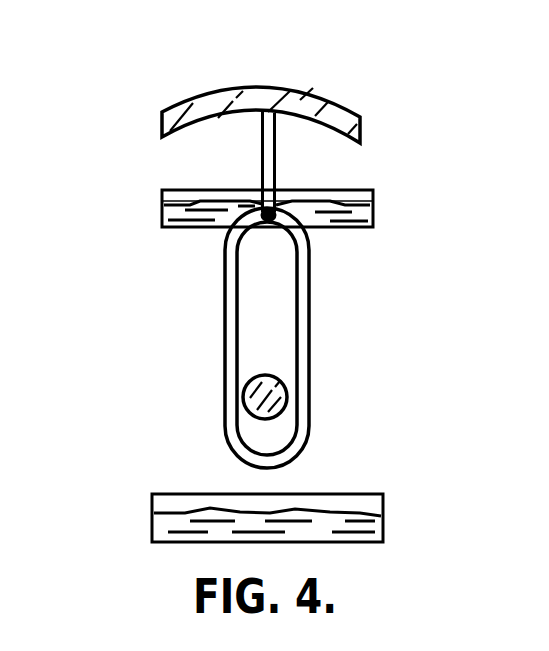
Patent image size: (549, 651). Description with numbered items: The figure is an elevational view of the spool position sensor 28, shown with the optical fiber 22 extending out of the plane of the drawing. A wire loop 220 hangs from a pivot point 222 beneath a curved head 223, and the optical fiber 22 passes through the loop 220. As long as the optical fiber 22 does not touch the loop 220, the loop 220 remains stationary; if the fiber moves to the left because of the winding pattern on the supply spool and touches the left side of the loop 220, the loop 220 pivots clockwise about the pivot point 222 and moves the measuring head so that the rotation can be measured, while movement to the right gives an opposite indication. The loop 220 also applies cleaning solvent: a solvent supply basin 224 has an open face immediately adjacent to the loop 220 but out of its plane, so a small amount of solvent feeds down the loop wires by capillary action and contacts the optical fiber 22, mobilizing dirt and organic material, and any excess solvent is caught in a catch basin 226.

The spool position sensor 28 is at (100, 85).
The curved head 223 is at (285, 98).
The pivot point 222 is at (270, 221).
The solvent supply basin 224 is at (161, 195).
The wire loop 220 is at (309, 307).
The optical fiber 22 is at (280, 397).
The catch basin 226 is at (152, 502).